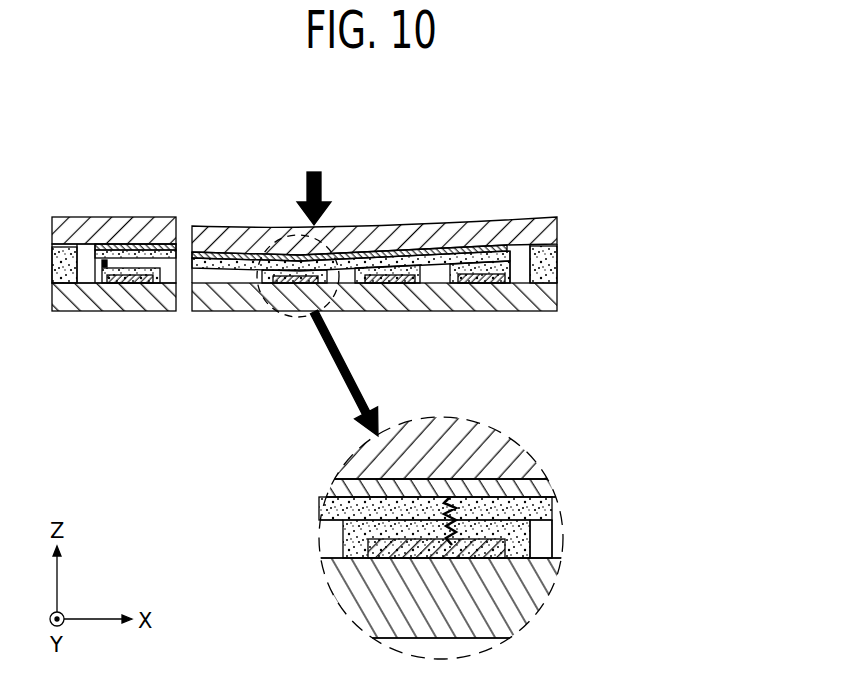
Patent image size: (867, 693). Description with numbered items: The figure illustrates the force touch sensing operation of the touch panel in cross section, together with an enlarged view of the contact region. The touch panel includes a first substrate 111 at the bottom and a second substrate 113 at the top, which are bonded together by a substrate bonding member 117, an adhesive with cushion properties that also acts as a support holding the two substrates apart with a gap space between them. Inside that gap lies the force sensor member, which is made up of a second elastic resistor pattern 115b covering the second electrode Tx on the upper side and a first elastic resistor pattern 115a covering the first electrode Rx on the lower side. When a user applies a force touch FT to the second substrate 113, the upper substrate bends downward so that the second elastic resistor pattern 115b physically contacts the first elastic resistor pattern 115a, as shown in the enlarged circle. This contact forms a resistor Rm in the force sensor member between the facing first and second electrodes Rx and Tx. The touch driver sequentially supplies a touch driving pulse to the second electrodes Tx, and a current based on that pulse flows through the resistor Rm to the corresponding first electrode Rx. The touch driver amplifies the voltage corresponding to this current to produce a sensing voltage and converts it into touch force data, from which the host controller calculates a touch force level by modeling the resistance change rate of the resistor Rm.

The first substrate 111 is at (552, 300).
The second substrate 113 is at (552, 230).
The first elastic resistor pattern 115a is at (528, 538).
The second elastic resistor pattern 115b is at (480, 258).
The substrate bonding member 117 is at (552, 265).
The second electrode Tx is at (418, 254).
The first electrode Rx is at (512, 548).
The resistor Rm is at (472, 508).
The force touch FT is at (314, 182).